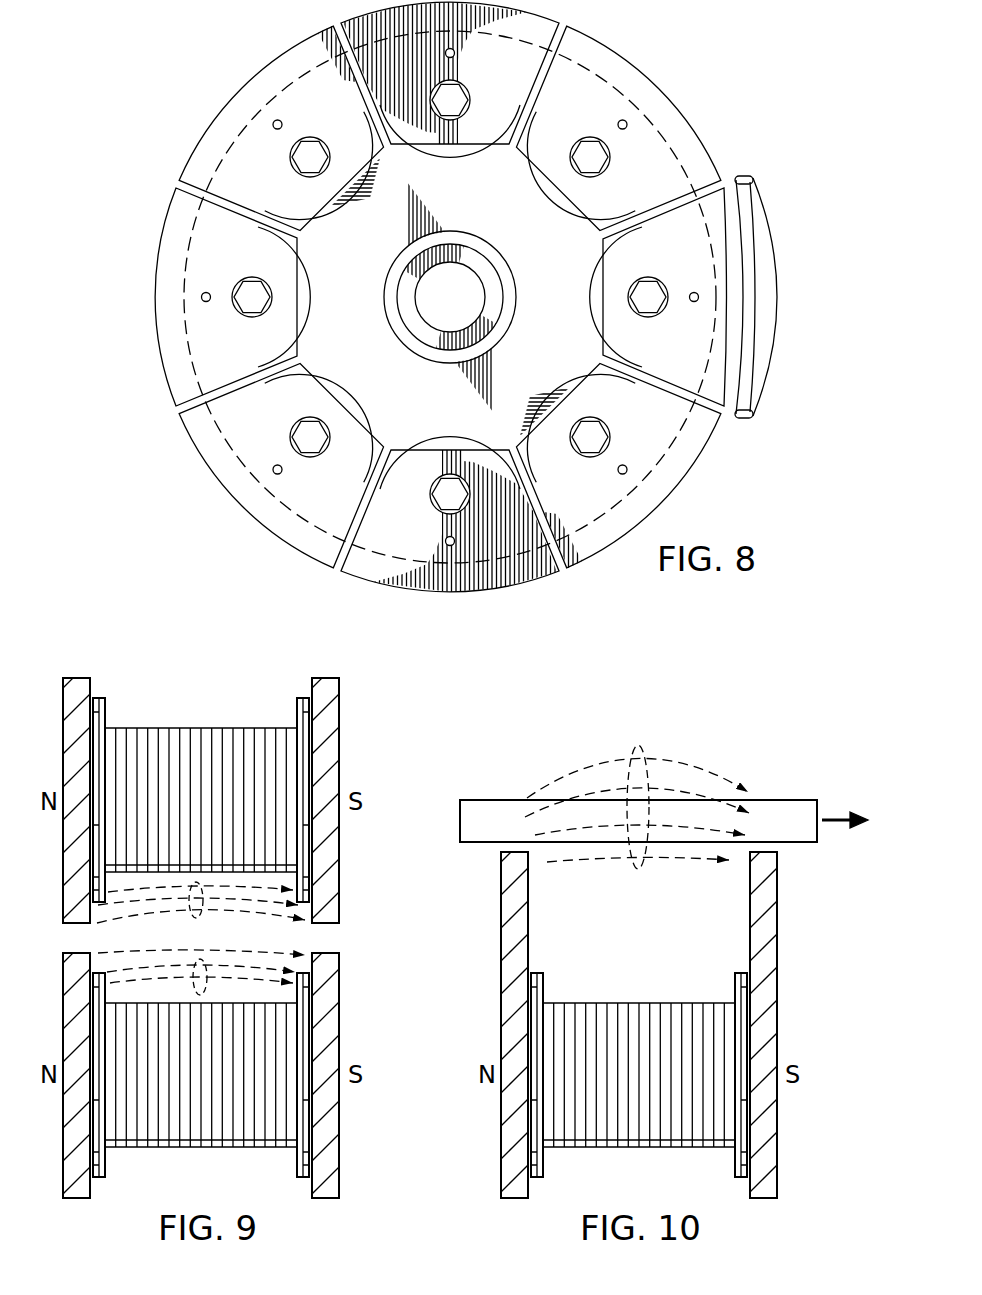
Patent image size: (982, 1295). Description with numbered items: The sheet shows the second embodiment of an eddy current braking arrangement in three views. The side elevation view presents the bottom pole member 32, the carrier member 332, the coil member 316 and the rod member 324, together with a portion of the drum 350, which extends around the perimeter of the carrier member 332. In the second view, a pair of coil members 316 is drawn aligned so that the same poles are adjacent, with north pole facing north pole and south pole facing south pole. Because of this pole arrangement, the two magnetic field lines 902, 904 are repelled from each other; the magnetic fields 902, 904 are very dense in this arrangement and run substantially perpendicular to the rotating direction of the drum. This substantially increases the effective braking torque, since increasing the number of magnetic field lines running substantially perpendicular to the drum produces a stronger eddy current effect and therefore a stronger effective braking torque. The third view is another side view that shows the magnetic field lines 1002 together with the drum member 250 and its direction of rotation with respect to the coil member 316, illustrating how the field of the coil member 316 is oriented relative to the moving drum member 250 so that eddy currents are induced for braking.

In FIG. 8, the bottom pole member 32 is at (266, 82).
In FIG. 8, the carrier member 332 is at (604, 64).
In FIG. 8, the coil member 316 is at (527, 182).
In FIG. 9, the coil member 316 is at (242, 1148).
In FIG. 10, the coil member 316 is at (668, 1003).
In FIG. 8, the rod member 324 is at (250, 279).
In FIG. 8, the drum 350 is at (778, 318).
In FIG. 9, the magnetic field line 902 is at (196, 913).
In FIG. 9, the magnetic field line 904 is at (203, 960).
In FIG. 10, the drum member 250 is at (788, 800).
In FIG. 10, the magnetic field lines 1002 is at (637, 868).